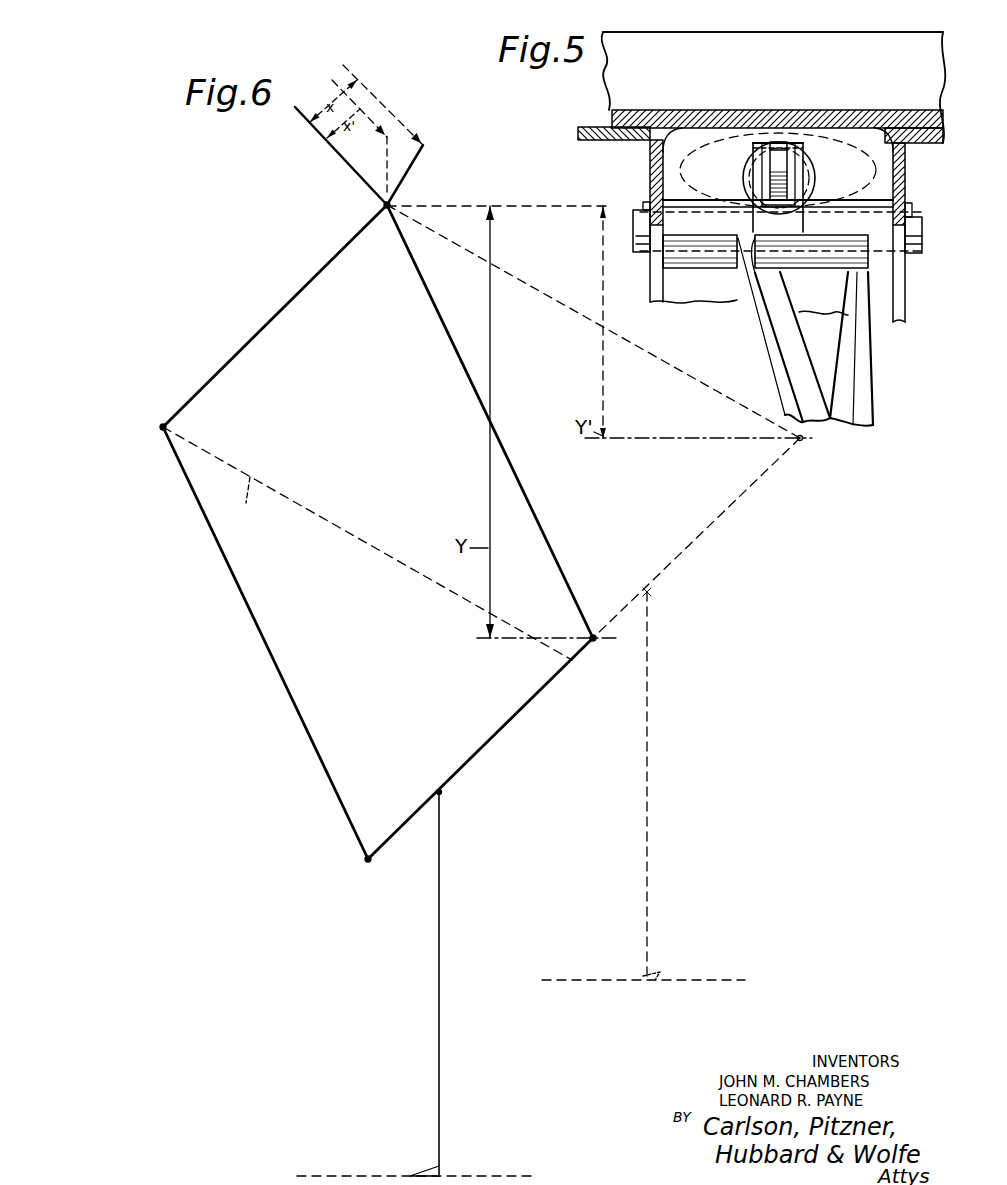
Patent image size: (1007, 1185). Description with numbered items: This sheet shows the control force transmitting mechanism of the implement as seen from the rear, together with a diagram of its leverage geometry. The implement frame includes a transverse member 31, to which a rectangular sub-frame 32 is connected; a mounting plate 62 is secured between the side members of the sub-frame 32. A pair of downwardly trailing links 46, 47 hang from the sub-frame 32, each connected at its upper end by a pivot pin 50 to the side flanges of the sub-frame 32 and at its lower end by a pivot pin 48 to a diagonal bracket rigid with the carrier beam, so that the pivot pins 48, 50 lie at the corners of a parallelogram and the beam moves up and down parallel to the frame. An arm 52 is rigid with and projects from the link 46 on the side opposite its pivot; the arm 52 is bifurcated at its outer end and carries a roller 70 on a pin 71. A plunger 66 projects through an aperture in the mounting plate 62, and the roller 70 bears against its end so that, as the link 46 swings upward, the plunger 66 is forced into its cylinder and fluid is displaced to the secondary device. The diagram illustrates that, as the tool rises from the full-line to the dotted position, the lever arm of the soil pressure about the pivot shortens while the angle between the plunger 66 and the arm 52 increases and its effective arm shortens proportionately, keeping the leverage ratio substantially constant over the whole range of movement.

In FIG. 5, the transverse member 31 is at (607, 83).
In FIG. 5, the sub-frame 32 is at (906, 182).
In FIG. 6, the link 46 is at (440, 311).
In FIG. 5, the link 46 is at (872, 381).
In FIG. 6, the link 47 is at (204, 502).
In FIG. 6, the pivot pin 48 is at (802, 442).
In FIG. 6, the pivot pin 50 is at (389, 205).
In FIG. 5, the pivot pin 50 is at (647, 216).
In FIG. 6, the arm 52 is at (386, 166).
In FIG. 5, the arm 52 is at (793, 193).
In FIG. 5, the mounting plate 62 is at (660, 156).
In FIG. 6, the plunger 66 is at (382, 84).
In FIG. 5, the plunger 66 is at (745, 178).
In FIG. 5, the roller 70 is at (779, 142).
In FIG. 5, the pin 71 is at (808, 157).